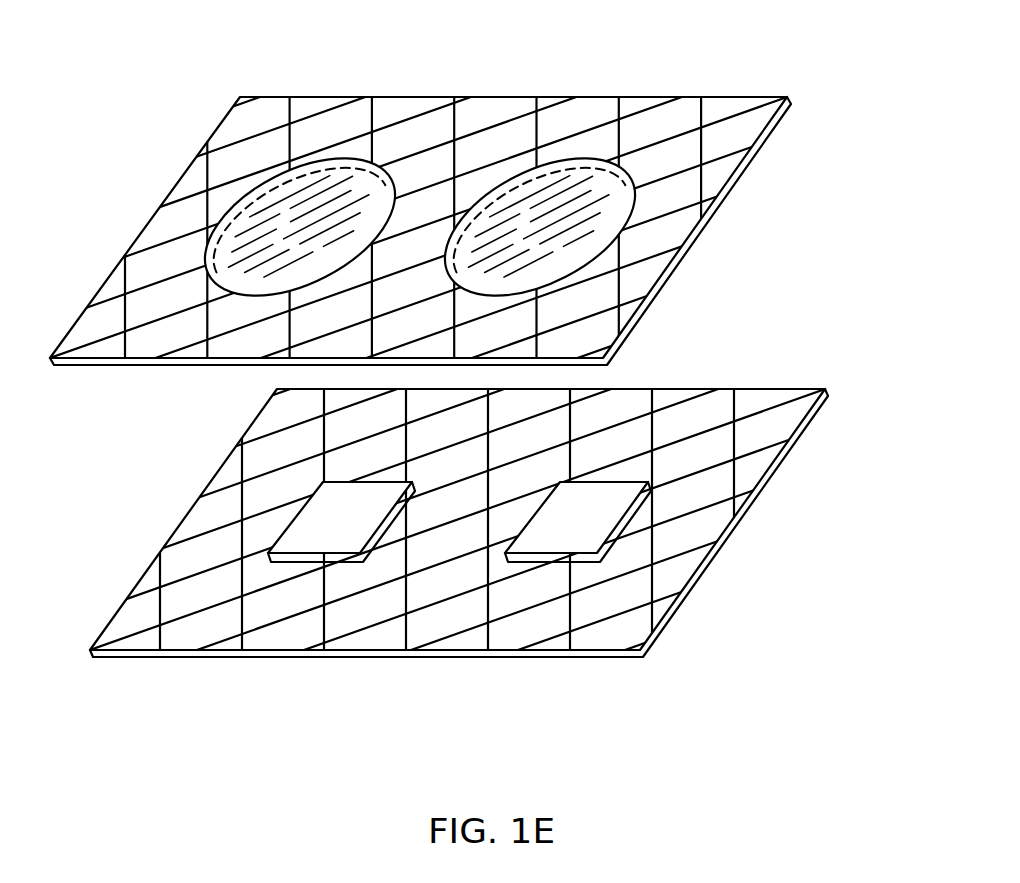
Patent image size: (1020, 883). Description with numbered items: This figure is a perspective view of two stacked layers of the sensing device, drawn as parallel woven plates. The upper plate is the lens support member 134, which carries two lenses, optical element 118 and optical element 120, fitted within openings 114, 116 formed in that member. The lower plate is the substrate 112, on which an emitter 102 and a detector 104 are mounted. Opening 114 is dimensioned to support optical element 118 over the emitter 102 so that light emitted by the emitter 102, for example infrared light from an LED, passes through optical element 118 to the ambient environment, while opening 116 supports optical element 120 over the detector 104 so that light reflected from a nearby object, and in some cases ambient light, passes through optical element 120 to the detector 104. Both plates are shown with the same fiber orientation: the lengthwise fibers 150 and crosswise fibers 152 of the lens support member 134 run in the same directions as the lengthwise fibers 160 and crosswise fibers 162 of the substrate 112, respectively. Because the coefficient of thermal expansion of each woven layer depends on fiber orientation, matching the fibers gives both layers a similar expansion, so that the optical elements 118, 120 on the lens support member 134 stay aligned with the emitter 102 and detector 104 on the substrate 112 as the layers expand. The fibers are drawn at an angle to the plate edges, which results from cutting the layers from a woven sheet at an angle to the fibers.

The emitter 102 is at (603, 560).
The detector 104 is at (290, 562).
The substrate 112 is at (721, 537).
The opening 114 is at (640, 176).
The opening 116 is at (262, 192).
The optical element 118 is at (645, 224).
The optical element 120 is at (250, 237).
The lens support member 134 is at (641, 305).
The lengthwise fibers 150 is at (495, 165).
The crosswise fibers 152 is at (450, 163).
The lengthwise fibers 160 is at (456, 566).
The crosswise fibers 162 is at (380, 583).